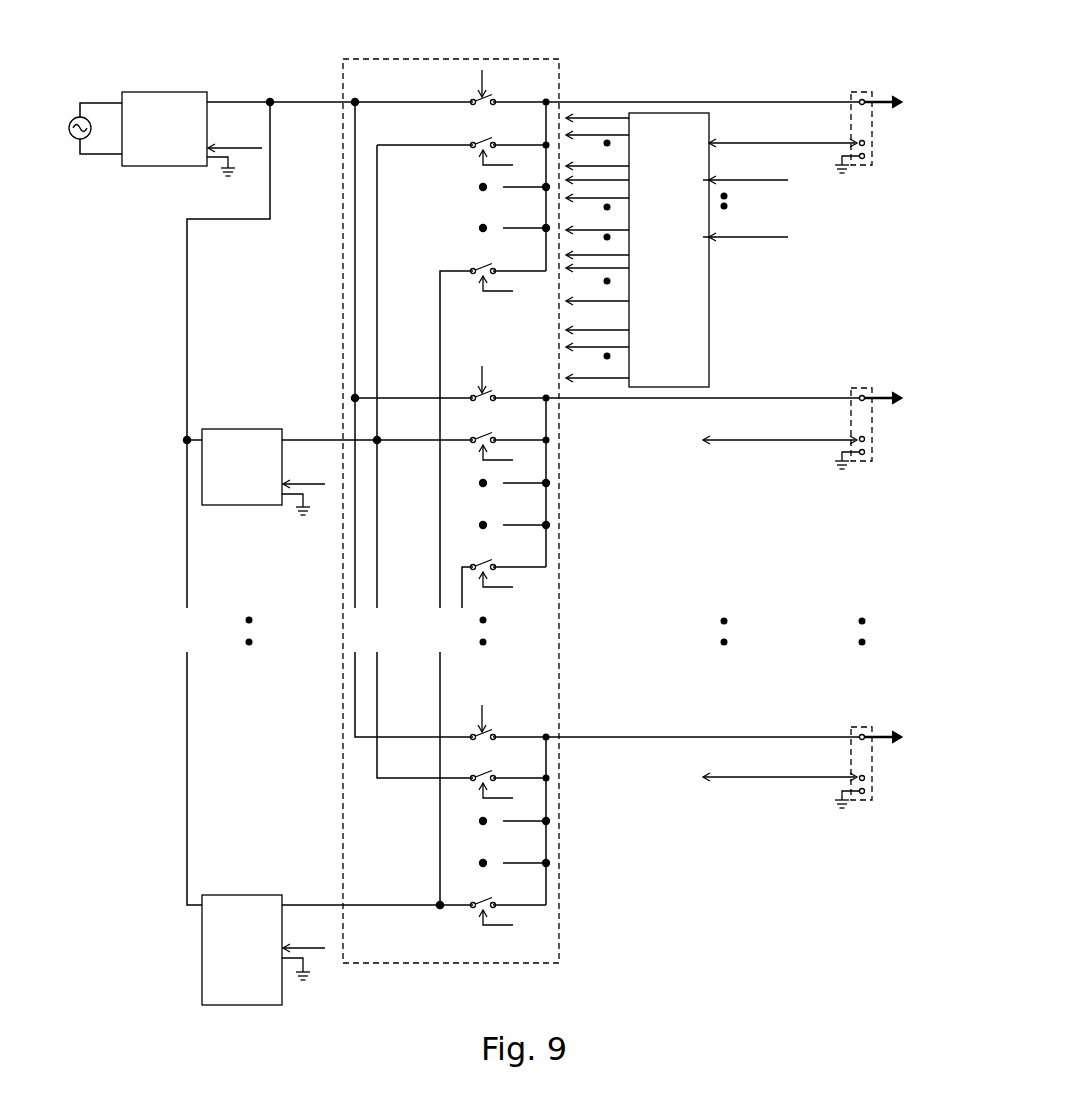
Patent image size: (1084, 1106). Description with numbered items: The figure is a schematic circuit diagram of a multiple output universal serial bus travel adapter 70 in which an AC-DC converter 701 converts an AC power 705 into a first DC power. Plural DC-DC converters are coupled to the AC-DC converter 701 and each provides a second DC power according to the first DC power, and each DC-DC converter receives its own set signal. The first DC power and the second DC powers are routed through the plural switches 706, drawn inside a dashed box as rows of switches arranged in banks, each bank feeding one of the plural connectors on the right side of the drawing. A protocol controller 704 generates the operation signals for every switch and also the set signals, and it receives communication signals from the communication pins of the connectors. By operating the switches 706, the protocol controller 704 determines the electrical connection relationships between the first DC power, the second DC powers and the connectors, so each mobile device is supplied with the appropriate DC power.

The power supply system 70 is at (245, 58).
The AC power source 705 is at (70, 121).
The AC-DC converter 701 is at (178, 155).
The protocol controller 704 is at (656, 280).
The plural switches 706 is at (447, 59).